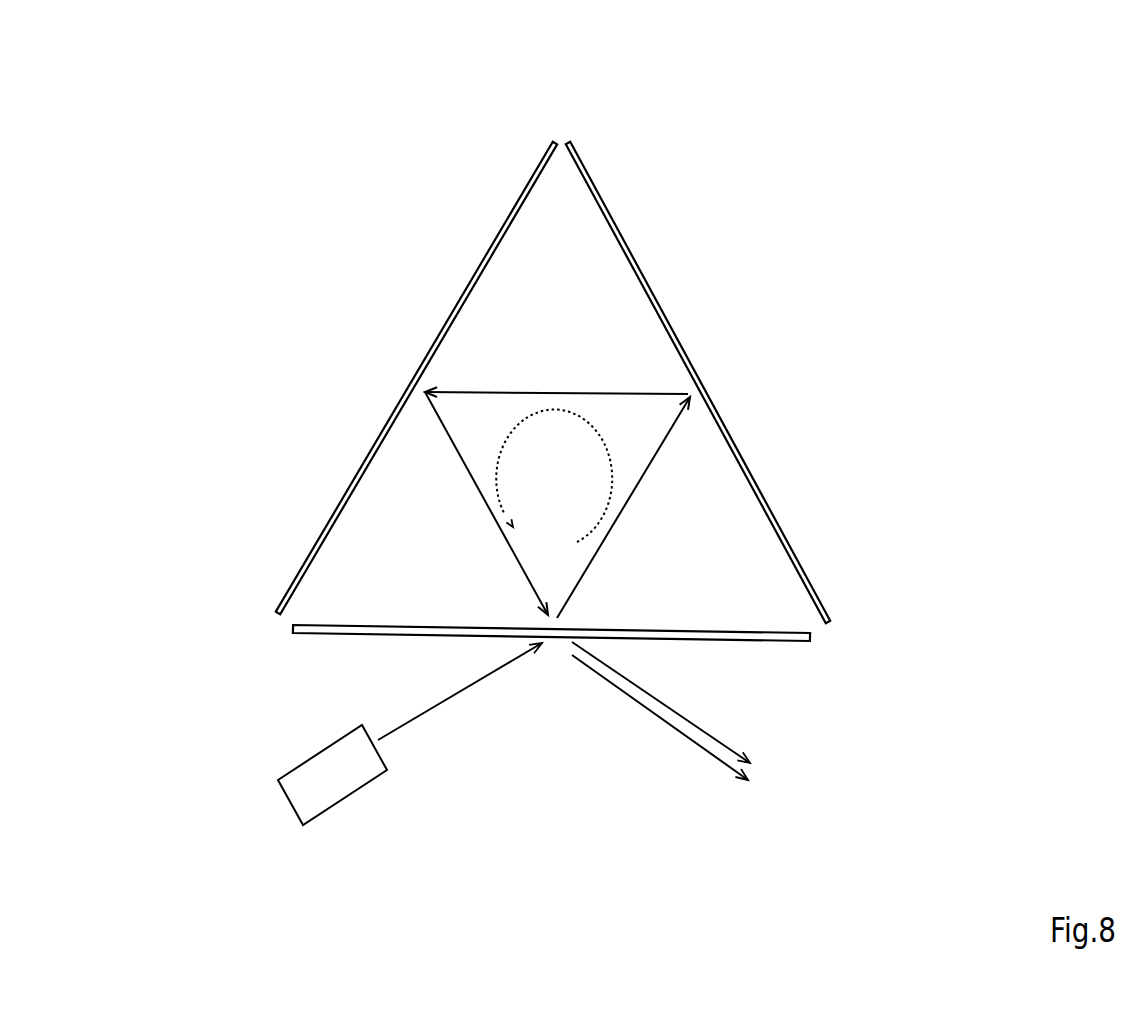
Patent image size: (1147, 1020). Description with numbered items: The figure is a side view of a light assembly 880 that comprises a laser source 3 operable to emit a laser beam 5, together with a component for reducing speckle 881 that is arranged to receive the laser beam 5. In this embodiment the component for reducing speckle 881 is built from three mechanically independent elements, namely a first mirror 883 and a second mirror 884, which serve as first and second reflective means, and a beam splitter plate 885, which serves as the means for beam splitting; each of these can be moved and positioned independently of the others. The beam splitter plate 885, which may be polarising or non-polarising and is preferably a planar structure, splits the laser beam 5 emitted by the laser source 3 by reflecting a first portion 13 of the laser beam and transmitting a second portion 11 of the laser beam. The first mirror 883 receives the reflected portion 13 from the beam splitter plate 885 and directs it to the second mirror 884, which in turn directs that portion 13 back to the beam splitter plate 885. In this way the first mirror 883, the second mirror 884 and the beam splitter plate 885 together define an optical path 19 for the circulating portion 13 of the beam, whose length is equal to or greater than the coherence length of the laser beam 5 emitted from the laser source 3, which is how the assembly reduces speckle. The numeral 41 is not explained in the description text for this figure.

The light assembly 880 is at (370, 150).
The component for reducing speckle 881 is at (680, 317).
The first mirror 883 is at (628, 247).
The second mirror 884 is at (475, 278).
The beam splitter plate 885 is at (745, 638).
The first portion of the laser beam 13 is at (580, 577).
The optical path 19 is at (618, 475).
The laser source 3 is at (296, 820).
The laser beam 5 is at (433, 709).
The reflected light beam 41 is at (703, 750).
The second portion of the laser beam 11 is at (705, 737).